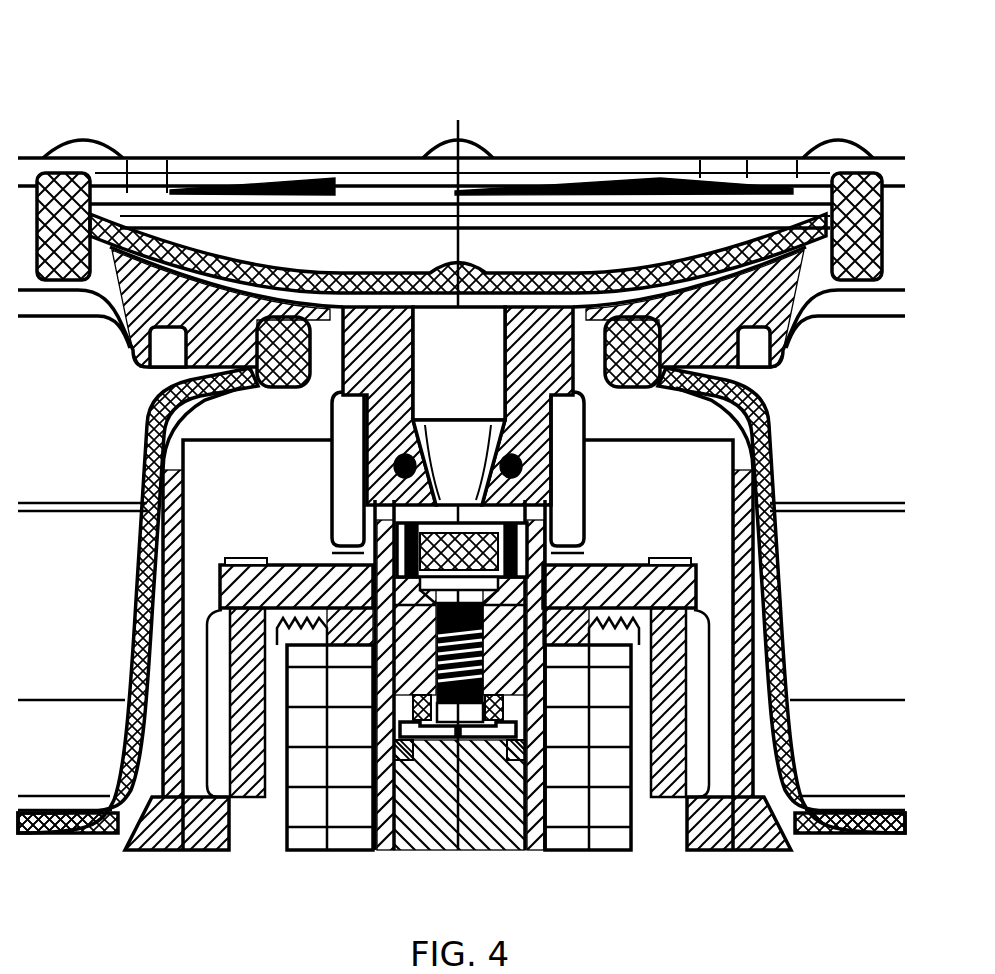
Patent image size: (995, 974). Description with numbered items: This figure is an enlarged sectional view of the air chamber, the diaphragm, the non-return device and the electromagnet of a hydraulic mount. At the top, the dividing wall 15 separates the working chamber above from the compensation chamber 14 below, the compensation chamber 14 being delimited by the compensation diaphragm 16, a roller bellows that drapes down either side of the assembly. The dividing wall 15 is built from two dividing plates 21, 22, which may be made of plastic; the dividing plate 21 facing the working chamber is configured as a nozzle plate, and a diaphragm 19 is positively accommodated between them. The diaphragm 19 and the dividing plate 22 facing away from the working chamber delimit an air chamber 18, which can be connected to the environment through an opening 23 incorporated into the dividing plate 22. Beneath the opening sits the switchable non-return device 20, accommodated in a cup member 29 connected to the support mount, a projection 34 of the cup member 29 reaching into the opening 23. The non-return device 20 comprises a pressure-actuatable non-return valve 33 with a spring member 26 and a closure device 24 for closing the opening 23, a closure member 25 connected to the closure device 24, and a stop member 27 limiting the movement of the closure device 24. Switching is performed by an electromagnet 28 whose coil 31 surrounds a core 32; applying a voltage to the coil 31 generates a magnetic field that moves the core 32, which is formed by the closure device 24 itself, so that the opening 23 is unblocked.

The compensation chamber 14 is at (821, 684).
The dividing wall 15 is at (178, 156).
The compensation diaphragm 16 is at (772, 443).
The air chamber 18 is at (527, 307).
The diaphragm 19 is at (367, 280).
The switchable non-return device 20 is at (537, 576).
The dividing plate 21 is at (806, 194).
The dividing plate 22 is at (795, 293).
The opening 23 is at (480, 327).
The closure device 24 is at (553, 660).
The closure member 25 is at (531, 518).
The spring member 26 is at (373, 636).
The stop member 27 is at (510, 772).
The electromagnet 28 is at (343, 769).
The cup member 29 is at (187, 410).
The coil 31 is at (607, 760).
The core 32 is at (392, 665).
The pressure-actuatable non-return valve 33 is at (507, 630).
The projection 34 is at (390, 343).